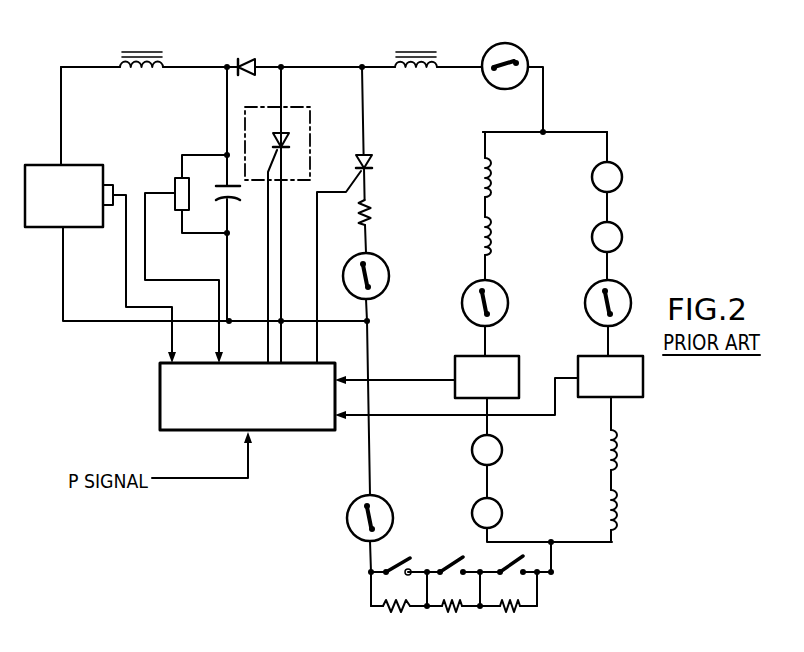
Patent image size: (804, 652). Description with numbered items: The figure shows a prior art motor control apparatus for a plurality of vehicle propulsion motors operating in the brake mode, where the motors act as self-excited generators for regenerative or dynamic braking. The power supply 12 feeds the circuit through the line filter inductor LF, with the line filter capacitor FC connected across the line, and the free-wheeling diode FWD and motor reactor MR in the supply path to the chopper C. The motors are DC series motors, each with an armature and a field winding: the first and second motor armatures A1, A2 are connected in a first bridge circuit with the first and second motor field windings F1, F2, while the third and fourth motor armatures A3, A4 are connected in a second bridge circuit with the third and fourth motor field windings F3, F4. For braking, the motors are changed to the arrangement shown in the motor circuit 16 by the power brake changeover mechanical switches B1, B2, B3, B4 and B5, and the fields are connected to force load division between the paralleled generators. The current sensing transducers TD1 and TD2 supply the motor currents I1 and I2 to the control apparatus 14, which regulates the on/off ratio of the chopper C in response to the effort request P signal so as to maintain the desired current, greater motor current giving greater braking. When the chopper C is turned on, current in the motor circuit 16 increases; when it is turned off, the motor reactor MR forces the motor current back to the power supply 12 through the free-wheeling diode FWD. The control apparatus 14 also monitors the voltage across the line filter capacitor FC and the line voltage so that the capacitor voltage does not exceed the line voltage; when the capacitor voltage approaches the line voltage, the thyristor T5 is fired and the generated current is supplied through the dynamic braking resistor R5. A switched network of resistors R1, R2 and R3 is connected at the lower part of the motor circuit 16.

The power supply 12 is at (47, 164).
The control apparatus 14 is at (158, 372).
The motor circuit 16 is at (557, 262).
The line filter inductor LF is at (118, 62).
The free-wheeling diode FWD is at (246, 60).
The motor reactor MR is at (392, 61).
The power brake changeover mechanical switch B1 is at (486, 55).
The chopper C is at (298, 107).
The line filter capacitor FC is at (243, 197).
The thyristor T5 is at (375, 162).
The dynamic braking resistor R5 is at (371, 212).
The power brake changeover mechanical switch B5 is at (383, 263).
The power brake changeover mechanical switch B4 is at (382, 500).
The motor current I1 is at (407, 378).
The motor current I2 is at (400, 421).
The third motor field winding F3 is at (481, 165).
The fourth motor field winding F4 is at (481, 234).
The third motor armature A3 is at (592, 176).
The fourth motor armature A4 is at (596, 226).
The power brake changeover mechanical switch B2 is at (509, 301).
The power brake changeover mechanical switch B3 is at (588, 300).
The current sensing transducer TD1 is at (487, 377).
The current sensing transducer TD2 is at (610, 376).
The second motor armature A2 is at (503, 452).
The first motor armature A1 is at (502, 509).
The second motor field winding F2 is at (606, 443).
The first motor field winding F1 is at (606, 503).
The resistor R1 is at (394, 611).
The resistor R2 is at (459, 597).
The resistor R3 is at (516, 613).